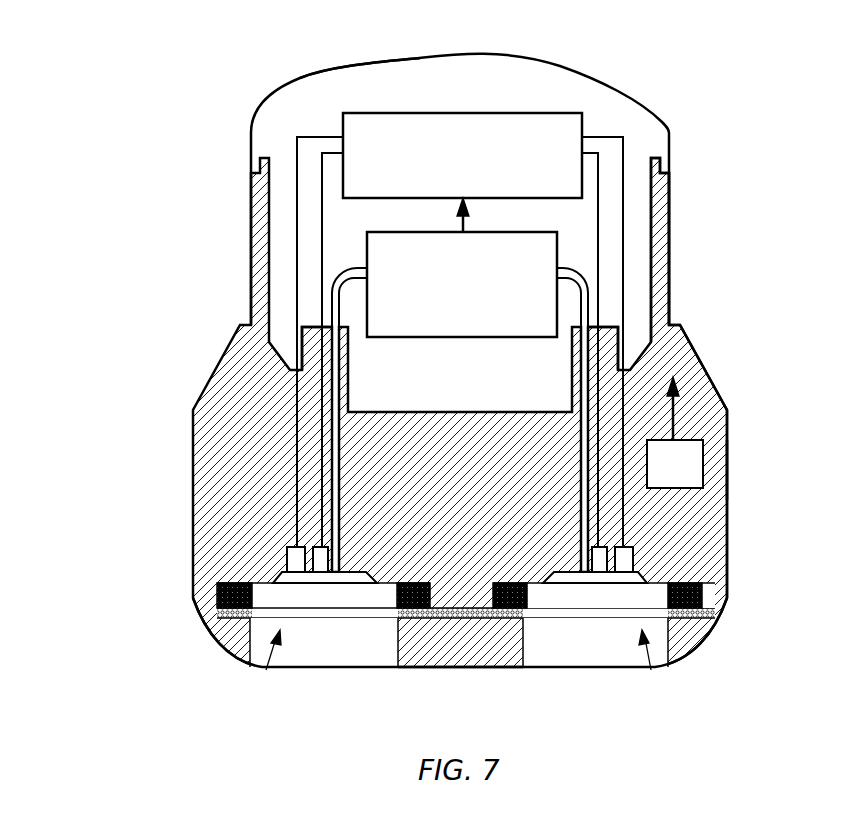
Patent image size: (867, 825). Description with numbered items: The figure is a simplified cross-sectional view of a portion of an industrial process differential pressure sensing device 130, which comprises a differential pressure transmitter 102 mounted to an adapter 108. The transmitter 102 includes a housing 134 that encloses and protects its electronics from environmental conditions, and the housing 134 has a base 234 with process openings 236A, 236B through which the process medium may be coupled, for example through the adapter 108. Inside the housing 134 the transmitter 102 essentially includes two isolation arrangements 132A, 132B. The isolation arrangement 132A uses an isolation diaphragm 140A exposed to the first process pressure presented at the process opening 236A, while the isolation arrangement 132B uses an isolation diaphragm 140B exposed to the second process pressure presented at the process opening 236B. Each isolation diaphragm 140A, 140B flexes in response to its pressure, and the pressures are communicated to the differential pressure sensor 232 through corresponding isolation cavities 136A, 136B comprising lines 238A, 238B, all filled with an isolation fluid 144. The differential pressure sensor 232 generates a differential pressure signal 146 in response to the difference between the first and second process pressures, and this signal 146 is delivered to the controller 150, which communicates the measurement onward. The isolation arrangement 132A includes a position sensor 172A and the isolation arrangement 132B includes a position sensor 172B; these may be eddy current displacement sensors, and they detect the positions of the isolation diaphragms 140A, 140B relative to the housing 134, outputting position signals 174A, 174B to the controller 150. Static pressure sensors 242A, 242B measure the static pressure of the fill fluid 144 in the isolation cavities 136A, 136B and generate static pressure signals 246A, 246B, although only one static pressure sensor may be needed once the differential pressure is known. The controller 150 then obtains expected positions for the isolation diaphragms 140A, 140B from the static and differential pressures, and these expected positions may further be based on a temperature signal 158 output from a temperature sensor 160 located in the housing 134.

The industrial process differential pressure sensing device 130 is at (151, 79).
The differential pressure transmitter 102 is at (325, 80).
The housing 134 is at (633, 100).
The controller 150 is at (522, 113).
The differential pressure signal 146 is at (466, 212).
The differential pressure sensor 232 is at (456, 335).
The isolation fluid 144 is at (332, 462).
The position signal 174A is at (322, 226).
The position signal 174B is at (603, 205).
The static pressure signal 246A is at (297, 262).
The static pressure signal 246B is at (625, 243).
The line 238A is at (332, 327).
The line 238B is at (630, 326).
The isolation arrangement 132A is at (240, 418).
The isolation arrangement 132B is at (600, 272).
The position sensor 172A is at (296, 548).
The position sensor 172B is at (626, 550).
The static pressure sensor 242A is at (300, 566).
The static pressure sensor 242B is at (625, 564).
The isolation cavity 136A is at (305, 575).
The isolation cavity 136B is at (618, 578).
The isolation diaphragm 140A is at (343, 585).
The isolation diaphragm 140B is at (567, 585).
The process opening 236A is at (248, 676).
The process opening 236B is at (667, 672).
The adapter 108 is at (693, 637).
The temperature signal 158 is at (682, 400).
The temperature sensor 160 is at (697, 455).
The base 234 is at (722, 470).